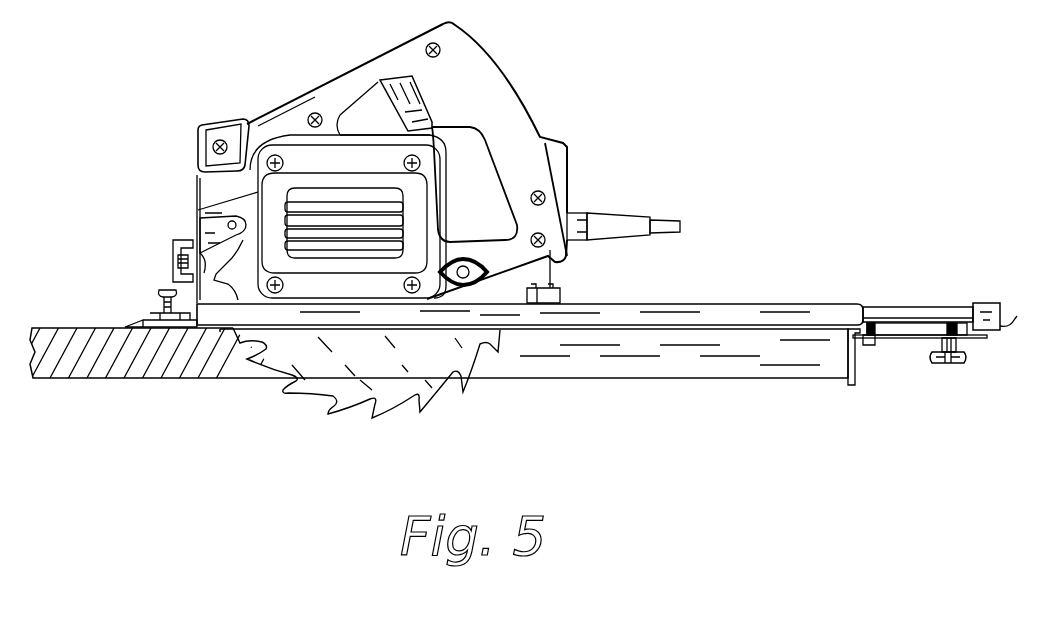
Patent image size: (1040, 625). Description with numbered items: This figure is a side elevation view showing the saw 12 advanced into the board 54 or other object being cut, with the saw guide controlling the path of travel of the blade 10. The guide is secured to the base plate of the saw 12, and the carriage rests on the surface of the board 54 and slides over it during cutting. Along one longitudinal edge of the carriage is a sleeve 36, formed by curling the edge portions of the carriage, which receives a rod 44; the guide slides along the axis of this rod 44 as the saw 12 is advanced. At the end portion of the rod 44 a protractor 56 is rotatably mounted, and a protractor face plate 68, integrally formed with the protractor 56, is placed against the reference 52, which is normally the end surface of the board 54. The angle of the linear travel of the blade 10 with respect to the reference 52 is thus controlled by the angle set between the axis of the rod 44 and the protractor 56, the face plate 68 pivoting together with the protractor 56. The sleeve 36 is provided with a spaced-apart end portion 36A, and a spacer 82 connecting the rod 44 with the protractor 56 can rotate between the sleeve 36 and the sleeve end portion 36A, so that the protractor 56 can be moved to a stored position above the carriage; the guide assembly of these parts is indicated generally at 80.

The saw 12 is at (280, 103).
The rotary or jig blade 10 is at (358, 355).
The board 54 is at (120, 373).
The sleeve 36 is at (767, 308).
The reference 52 is at (815, 372).
The rod 44 is at (886, 310).
The guide assembly 80 is at (893, 300).
The sleeve end portion 36A is at (986, 305).
The spacer 82 is at (889, 326).
The protractor 56 is at (975, 338).
The protractor face plate 68 is at (853, 358).